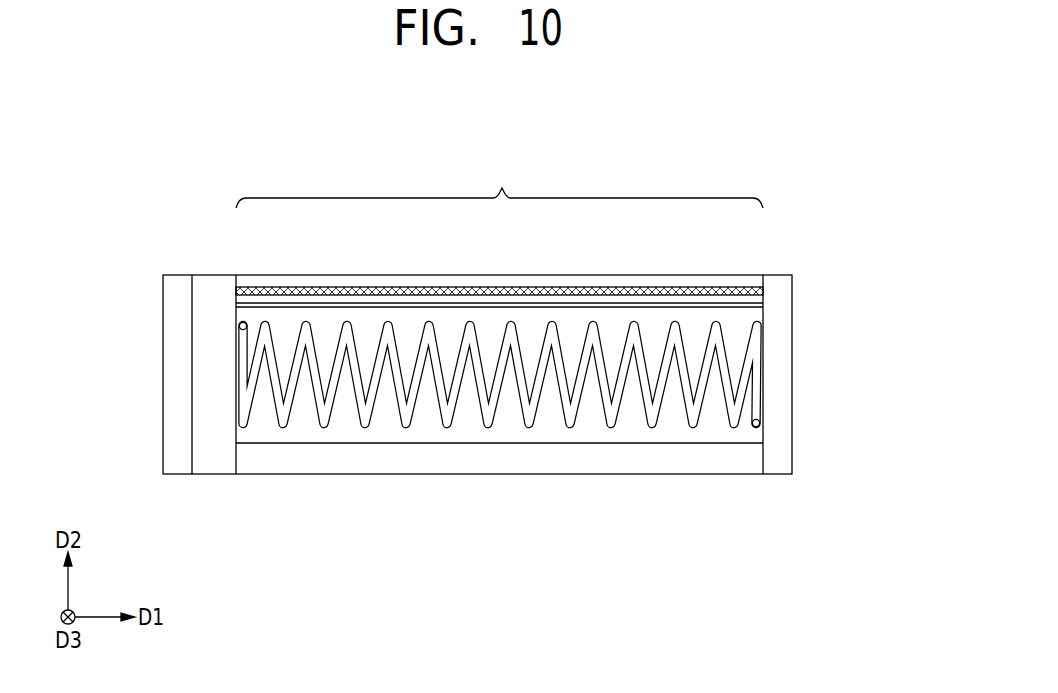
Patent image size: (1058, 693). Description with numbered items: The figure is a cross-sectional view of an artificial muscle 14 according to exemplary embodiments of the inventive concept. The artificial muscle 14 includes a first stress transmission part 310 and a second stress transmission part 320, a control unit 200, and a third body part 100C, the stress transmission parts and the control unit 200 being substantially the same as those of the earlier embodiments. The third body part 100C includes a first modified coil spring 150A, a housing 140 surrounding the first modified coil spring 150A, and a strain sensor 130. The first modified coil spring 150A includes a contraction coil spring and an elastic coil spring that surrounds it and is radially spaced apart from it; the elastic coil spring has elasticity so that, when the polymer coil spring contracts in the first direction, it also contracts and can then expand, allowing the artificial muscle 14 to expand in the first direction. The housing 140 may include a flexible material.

The artificial muscle 14 is at (885, 135).
The third body part 100C is at (499, 234).
The strain sensor 130 is at (618, 292).
The housing 140 is at (403, 282).
The first modified coil spring 150A is at (505, 315).
The control unit 200 is at (210, 288).
The first stress transmission part 310 is at (175, 372).
The second stress transmission part 320 is at (782, 373).